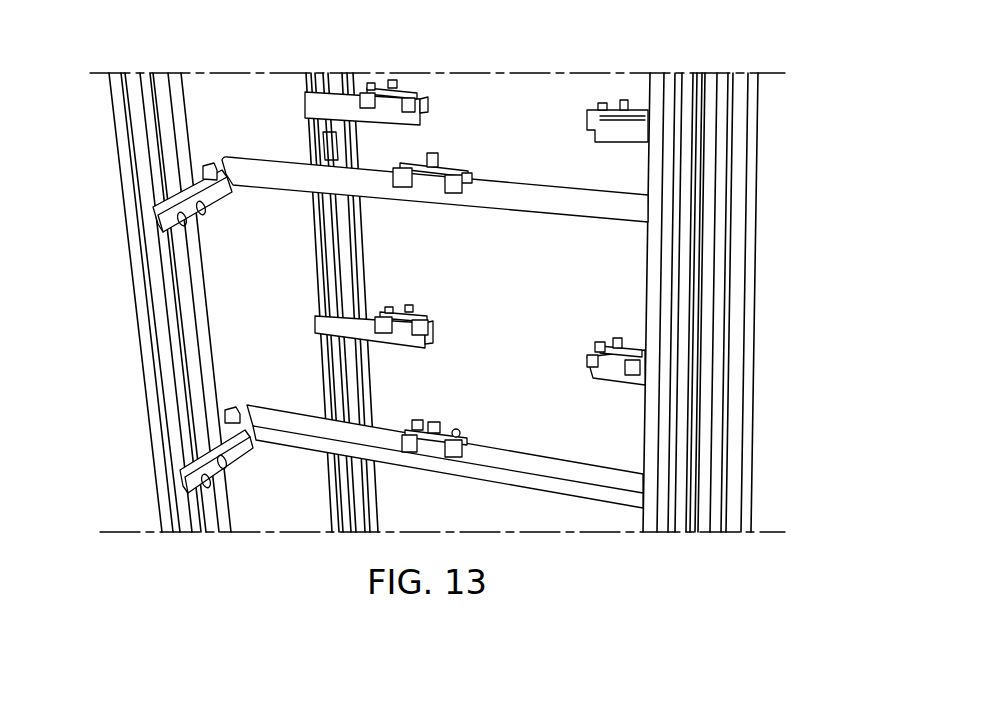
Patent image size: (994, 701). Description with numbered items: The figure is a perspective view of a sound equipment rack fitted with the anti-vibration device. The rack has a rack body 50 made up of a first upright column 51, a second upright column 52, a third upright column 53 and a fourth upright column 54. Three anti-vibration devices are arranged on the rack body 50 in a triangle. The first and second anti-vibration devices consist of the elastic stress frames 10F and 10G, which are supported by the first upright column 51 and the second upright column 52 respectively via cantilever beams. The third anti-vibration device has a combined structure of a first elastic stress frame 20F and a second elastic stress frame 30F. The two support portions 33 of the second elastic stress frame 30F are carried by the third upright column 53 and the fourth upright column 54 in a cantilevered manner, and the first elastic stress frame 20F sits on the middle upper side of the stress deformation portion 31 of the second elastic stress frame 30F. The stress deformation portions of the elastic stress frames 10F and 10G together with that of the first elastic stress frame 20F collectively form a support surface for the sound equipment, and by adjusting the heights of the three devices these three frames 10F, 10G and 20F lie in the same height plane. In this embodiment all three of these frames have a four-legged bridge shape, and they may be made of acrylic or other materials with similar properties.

The elastic stress frame 10F is at (418, 92).
The elastic stress frame 10G is at (630, 105).
The first elastic stress frame 20F is at (470, 170).
The second elastic stress frame 30F is at (607, 202).
The stress deformation portion 31 is at (430, 190).
The support portion 33 is at (210, 197).
The rack body 50 is at (686, 318).
The first upright column 51 is at (320, 149).
The second upright column 52 is at (740, 173).
The third upright column 53 is at (153, 393).
The fourth upright column 54 is at (680, 470).